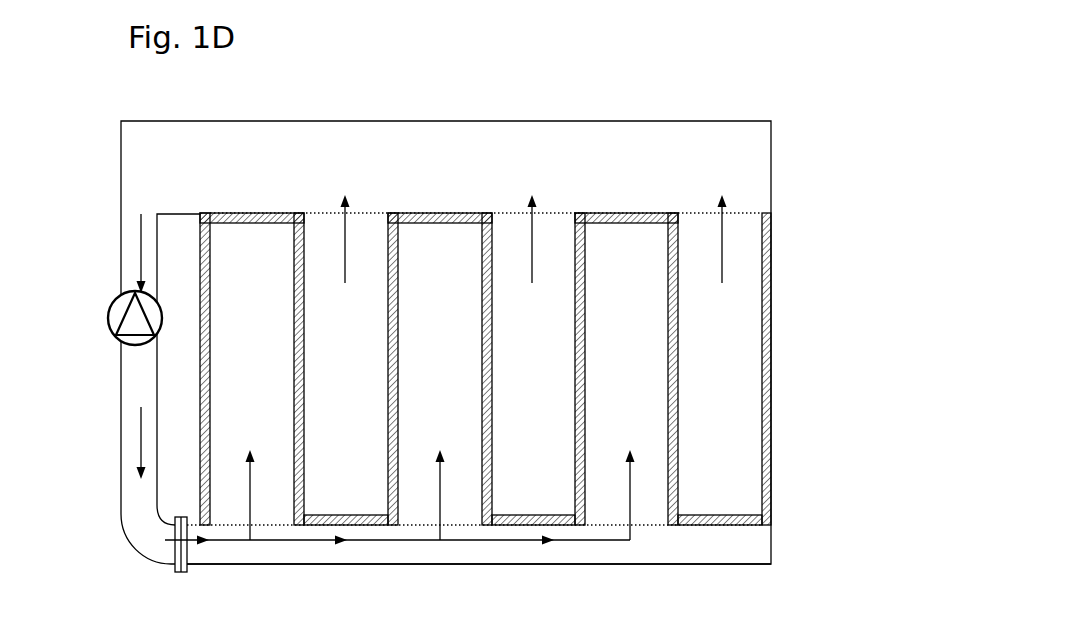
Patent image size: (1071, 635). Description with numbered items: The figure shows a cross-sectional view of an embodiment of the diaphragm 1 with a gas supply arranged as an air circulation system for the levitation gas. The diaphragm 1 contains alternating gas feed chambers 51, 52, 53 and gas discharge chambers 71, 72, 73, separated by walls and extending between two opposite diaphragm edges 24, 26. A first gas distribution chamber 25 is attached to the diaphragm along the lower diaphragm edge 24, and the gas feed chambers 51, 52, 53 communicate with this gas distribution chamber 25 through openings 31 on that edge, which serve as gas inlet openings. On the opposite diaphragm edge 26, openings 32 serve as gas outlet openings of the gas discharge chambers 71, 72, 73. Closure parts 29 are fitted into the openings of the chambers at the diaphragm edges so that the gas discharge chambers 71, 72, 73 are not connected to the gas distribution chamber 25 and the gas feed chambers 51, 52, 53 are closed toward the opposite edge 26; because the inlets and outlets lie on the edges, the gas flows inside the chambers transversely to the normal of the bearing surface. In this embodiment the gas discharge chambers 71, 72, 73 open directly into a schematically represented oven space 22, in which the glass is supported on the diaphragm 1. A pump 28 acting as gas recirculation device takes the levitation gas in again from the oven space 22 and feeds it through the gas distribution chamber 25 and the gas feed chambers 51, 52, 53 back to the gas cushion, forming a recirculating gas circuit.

The diaphragm 1 is at (771, 362).
The oven space 22 is at (522, 153).
The diaphragm edge 24 is at (652, 525).
The gas distribution chamber 25 is at (771, 550).
The diaphragm edge 26 is at (557, 213).
The pump 28 is at (110, 338).
The closure parts 29 is at (255, 223).
The openings 31 is at (395, 531).
The openings 32 is at (498, 203).
The gas feed chamber 51 is at (237, 409).
The gas feed chamber 52 is at (429, 409).
The gas feed chamber 53 is at (617, 409).
The gas discharge chamber 71 is at (337, 409).
The gas discharge chamber 72 is at (524, 409).
The gas discharge chamber 73 is at (711, 409).